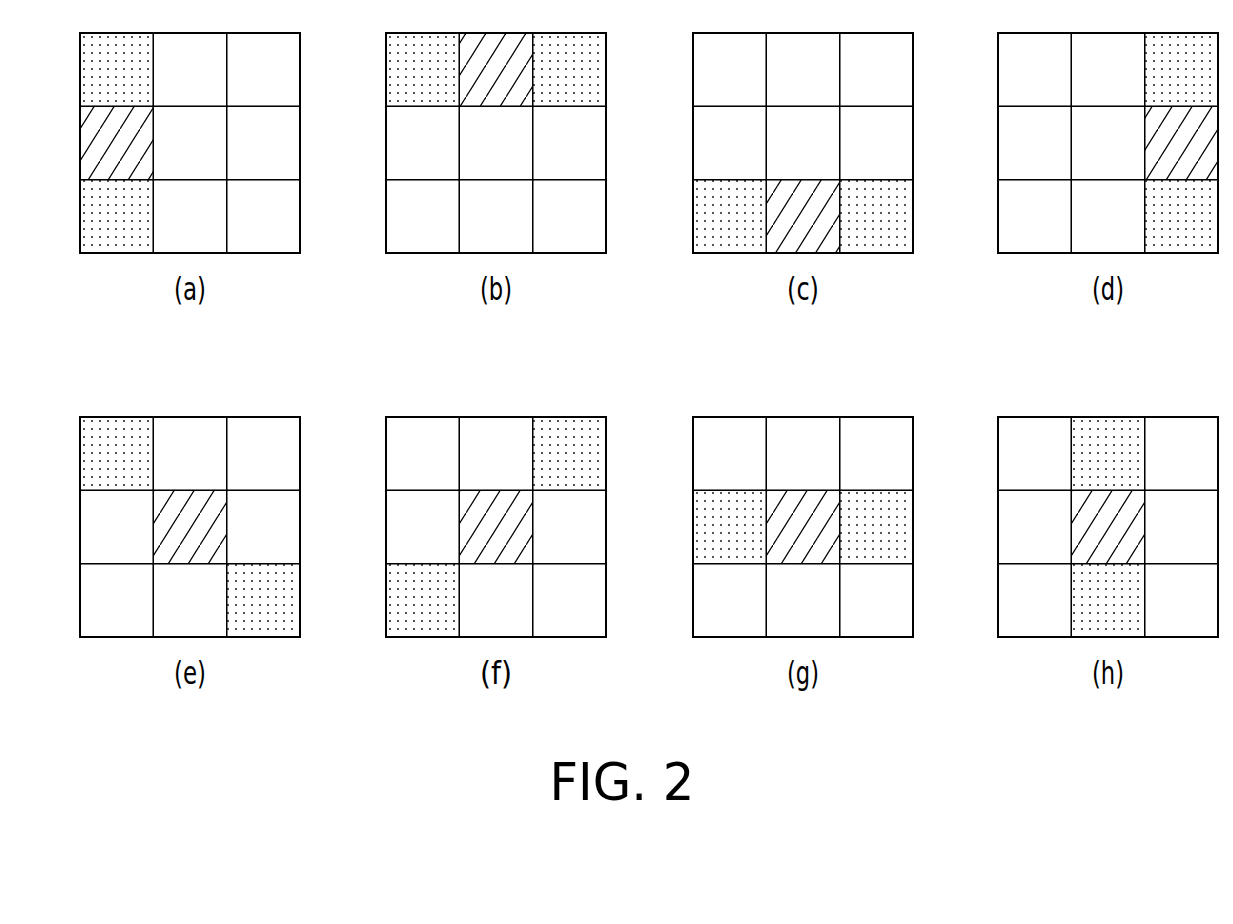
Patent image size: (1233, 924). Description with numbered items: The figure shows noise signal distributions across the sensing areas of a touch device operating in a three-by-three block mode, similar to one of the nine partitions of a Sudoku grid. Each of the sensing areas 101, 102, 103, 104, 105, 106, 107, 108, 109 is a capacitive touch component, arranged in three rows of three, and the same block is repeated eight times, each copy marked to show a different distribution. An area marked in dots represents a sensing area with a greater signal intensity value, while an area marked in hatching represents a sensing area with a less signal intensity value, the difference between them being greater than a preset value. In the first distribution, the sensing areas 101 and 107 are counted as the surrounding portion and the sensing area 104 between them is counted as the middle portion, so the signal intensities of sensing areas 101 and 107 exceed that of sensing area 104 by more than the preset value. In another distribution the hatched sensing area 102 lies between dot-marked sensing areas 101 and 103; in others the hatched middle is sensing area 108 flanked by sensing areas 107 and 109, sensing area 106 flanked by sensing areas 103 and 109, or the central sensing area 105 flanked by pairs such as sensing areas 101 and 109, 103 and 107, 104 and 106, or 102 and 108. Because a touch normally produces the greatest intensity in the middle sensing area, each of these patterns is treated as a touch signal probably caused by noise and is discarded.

The sensing area 101 is at (575, 261).
The sensing area 102 is at (648, 261).
The sensing area 103 is at (722, 261).
The sensing area 104 is at (575, 334).
The sensing area 105 is at (648, 334).
The sensing area 106 is at (722, 334).
The sensing area 107 is at (575, 408).
The sensing area 108 is at (648, 408).
The sensing area 109 is at (722, 408).